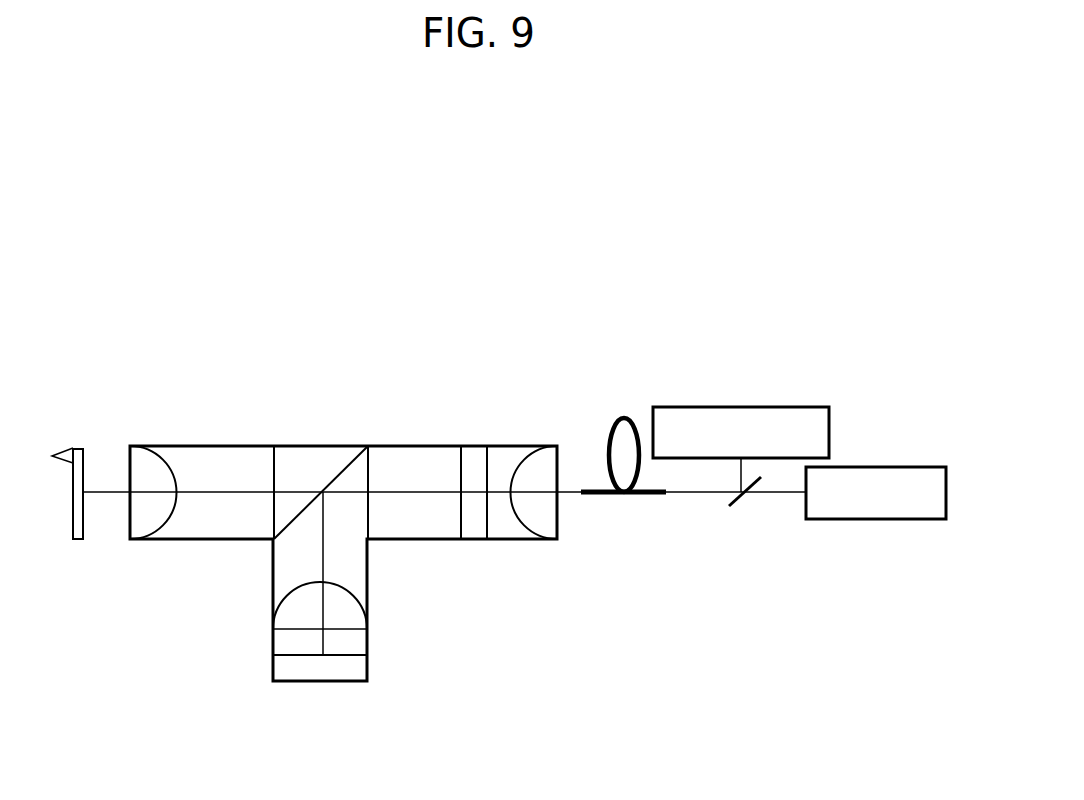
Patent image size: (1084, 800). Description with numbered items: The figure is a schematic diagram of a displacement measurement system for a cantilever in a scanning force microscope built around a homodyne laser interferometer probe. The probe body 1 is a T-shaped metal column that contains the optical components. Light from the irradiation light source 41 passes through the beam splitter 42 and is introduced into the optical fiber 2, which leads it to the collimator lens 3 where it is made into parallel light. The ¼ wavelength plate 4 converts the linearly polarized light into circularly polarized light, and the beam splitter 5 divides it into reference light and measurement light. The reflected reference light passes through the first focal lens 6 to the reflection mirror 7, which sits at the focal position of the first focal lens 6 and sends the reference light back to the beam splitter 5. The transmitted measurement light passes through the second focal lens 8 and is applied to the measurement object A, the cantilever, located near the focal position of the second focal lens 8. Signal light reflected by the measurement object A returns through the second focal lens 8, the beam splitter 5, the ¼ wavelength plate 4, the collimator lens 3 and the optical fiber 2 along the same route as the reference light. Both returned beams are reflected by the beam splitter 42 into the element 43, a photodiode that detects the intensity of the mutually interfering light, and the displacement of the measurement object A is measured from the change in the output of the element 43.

The optical probe 1 is at (418, 541).
The optical fiber 2 is at (627, 495).
The collimator lens 3 is at (547, 532).
The ¼ wavelength plate 4 is at (476, 541).
The beam splitter 5 is at (335, 446).
The first focal lens 6 is at (285, 623).
The reflection mirror 7 is at (283, 669).
The second focal lens 8 is at (143, 455).
The measurement object A is at (79, 448).
The irradiation light source 41 is at (865, 520).
The beam splitter 42 is at (737, 500).
The element for detecting the intensity of interference light 43 is at (769, 407).